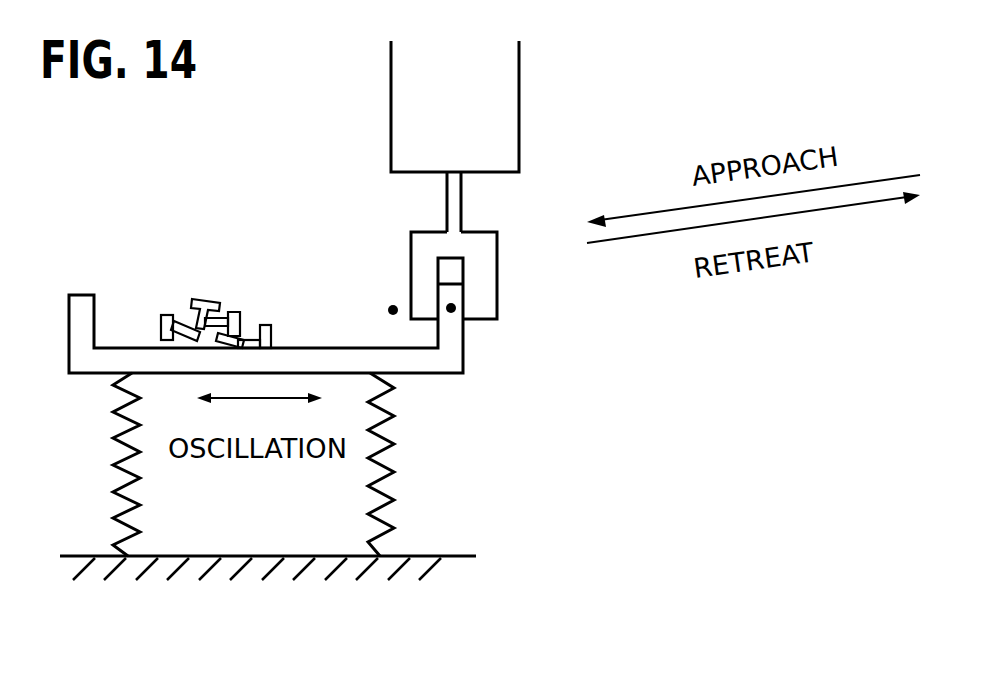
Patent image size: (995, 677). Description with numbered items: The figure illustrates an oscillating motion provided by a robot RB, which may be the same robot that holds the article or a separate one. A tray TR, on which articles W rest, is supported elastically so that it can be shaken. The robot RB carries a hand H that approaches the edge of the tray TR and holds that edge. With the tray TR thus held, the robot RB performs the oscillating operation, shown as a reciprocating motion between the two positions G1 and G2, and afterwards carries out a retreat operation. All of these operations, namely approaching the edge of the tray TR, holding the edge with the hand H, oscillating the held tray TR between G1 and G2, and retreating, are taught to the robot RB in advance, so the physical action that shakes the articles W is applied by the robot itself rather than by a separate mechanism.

The robot RB is at (497, 101).
The hand H is at (482, 283).
The tray TR is at (422, 362).
The workpieces W is at (200, 274).
The first oscillation position G1 is at (451, 311).
The second oscillation position G2 is at (390, 306).